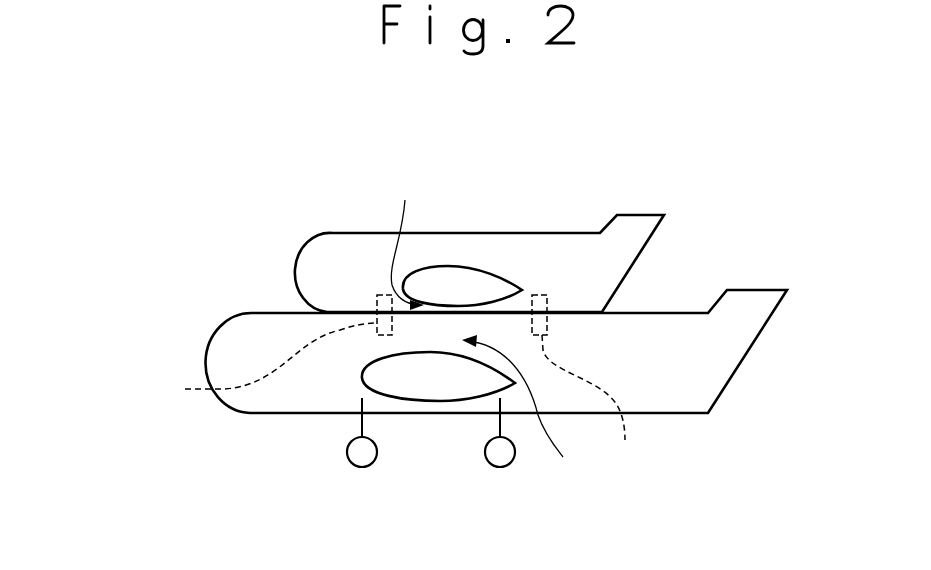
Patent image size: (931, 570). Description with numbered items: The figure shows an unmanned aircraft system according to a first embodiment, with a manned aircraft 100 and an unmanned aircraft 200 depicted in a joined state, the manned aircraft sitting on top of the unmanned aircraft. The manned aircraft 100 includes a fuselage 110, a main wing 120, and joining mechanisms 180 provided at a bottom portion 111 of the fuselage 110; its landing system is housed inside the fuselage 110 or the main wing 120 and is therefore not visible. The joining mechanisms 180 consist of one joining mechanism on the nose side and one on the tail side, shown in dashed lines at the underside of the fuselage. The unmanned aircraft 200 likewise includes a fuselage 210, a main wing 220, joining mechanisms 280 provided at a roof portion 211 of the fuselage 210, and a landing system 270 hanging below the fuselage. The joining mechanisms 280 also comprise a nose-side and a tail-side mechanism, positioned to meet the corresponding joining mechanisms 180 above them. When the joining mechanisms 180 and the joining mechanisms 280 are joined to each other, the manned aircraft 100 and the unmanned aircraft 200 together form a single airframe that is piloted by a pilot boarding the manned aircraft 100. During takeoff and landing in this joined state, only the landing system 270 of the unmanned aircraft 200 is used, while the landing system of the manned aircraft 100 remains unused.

The manned aircraft 100 is at (428, 232).
The fuselage 110 is at (470, 233).
The bottom portion 111 is at (406, 238).
The main wing 120 is at (500, 277).
The joining mechanisms 180 is at (378, 305).
The unmanned aircraft 200 is at (432, 416).
The fuselage 210 is at (457, 413).
The roof portion 211 is at (520, 415).
The main wing 220 is at (432, 388).
The landing system 270 is at (499, 467).
The joining mechanisms 280 is at (394, 401).